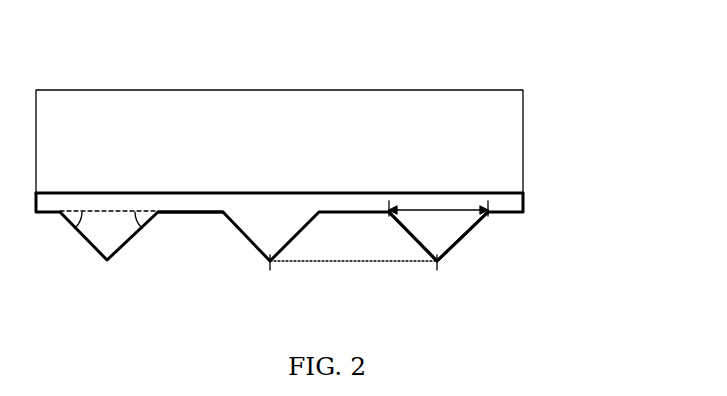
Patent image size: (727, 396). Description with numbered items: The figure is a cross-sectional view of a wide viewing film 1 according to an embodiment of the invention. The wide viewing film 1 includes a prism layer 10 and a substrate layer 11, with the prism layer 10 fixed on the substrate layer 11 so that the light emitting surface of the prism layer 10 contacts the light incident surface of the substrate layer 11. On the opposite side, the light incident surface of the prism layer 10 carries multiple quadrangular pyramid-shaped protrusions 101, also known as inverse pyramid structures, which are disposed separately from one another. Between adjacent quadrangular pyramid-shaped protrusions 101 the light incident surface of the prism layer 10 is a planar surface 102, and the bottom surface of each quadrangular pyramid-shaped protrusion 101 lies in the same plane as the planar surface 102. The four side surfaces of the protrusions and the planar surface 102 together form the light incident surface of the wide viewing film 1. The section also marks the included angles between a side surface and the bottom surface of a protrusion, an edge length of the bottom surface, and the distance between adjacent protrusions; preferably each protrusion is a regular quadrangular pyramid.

The wide viewing film 1 is at (277, 60).
The substrate layer 11 is at (523, 108).
The prism layer 10 is at (525, 197).
The quadrangular pyramid-shaped protrusion 101 is at (458, 240).
The planar surface 102 is at (182, 213).